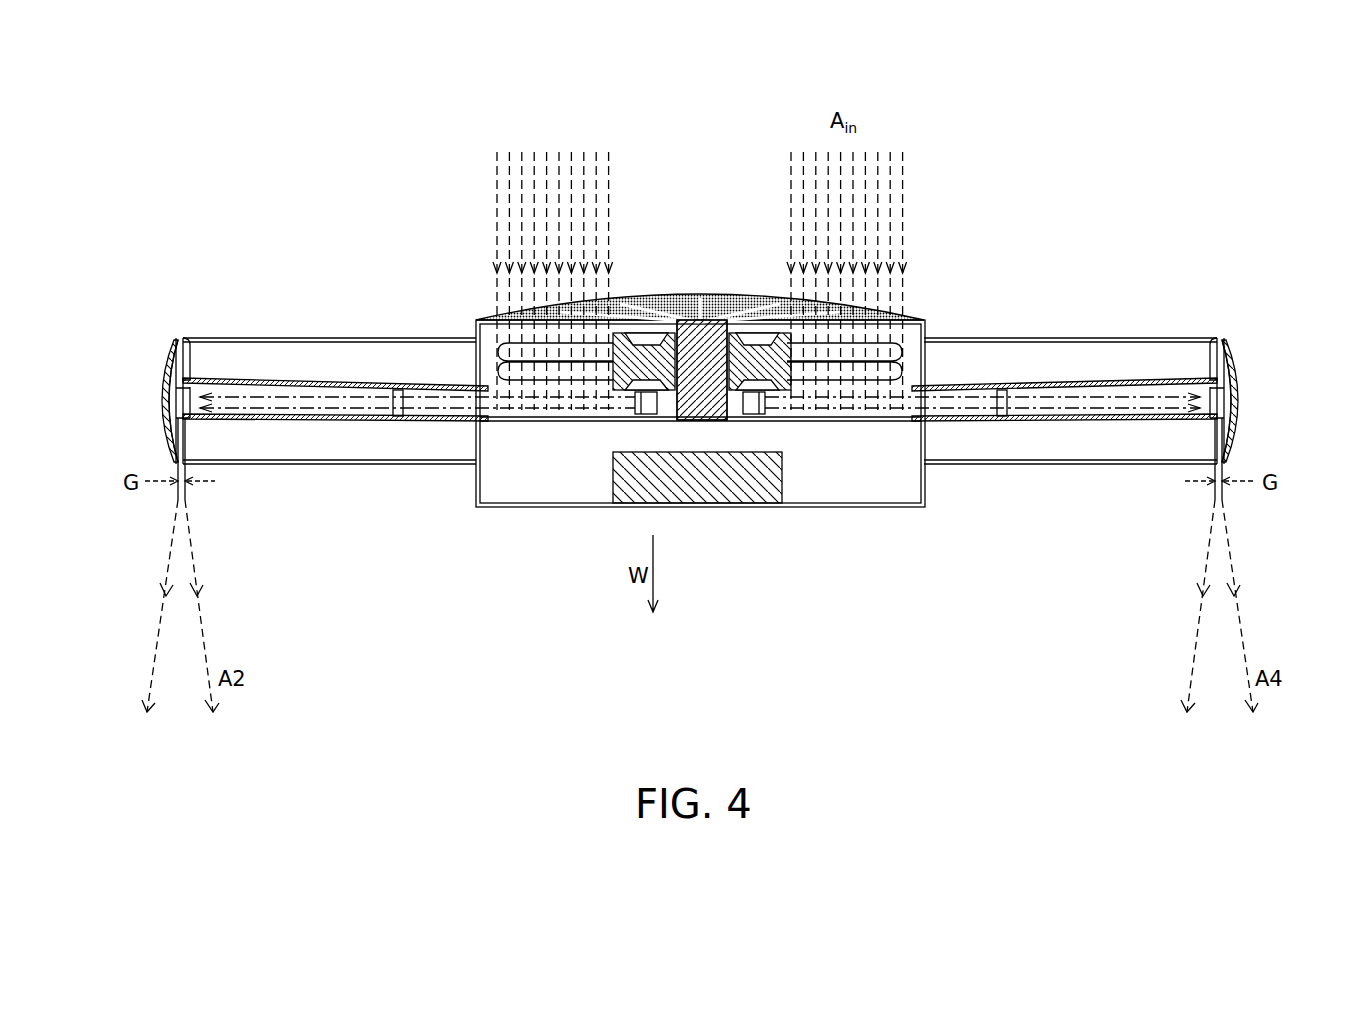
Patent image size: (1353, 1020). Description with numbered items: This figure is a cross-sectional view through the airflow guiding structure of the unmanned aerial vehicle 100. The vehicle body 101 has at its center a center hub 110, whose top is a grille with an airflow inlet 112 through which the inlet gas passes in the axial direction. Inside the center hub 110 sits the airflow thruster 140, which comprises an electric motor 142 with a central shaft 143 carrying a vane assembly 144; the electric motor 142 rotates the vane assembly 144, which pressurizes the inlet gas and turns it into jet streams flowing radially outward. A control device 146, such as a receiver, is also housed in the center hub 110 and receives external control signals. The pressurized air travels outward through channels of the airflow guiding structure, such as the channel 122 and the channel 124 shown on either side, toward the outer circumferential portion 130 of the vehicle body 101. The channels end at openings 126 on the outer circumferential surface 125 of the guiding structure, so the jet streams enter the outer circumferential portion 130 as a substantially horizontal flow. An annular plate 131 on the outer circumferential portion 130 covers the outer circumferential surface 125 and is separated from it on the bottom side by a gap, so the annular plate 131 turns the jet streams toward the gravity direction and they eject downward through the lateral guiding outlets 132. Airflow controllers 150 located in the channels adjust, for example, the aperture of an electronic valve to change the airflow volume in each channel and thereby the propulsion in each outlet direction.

The unmanned aerial vehicle 100 is at (158, 74).
The vehicle body 101 is at (210, 183).
The center hub 110 is at (510, 507).
The airflow inlet 112 is at (890, 310).
The channel 122 is at (1066, 385).
The channel 124 is at (333, 385).
The outer circumferential surface 125 is at (200, 338).
The opening 126 is at (168, 387).
The outer circumferential portion 130 is at (160, 343).
The annular plate 131 is at (700, 401).
The lateral guiding outlet 132 is at (205, 490).
The airflow thruster 140 is at (905, 588).
The electric motor 142 is at (717, 418).
The shaft 143 is at (702, 370).
The vane assembly 144 is at (785, 392).
The control device 146 is at (700, 503).
The airflow controller 150 is at (397, 416).